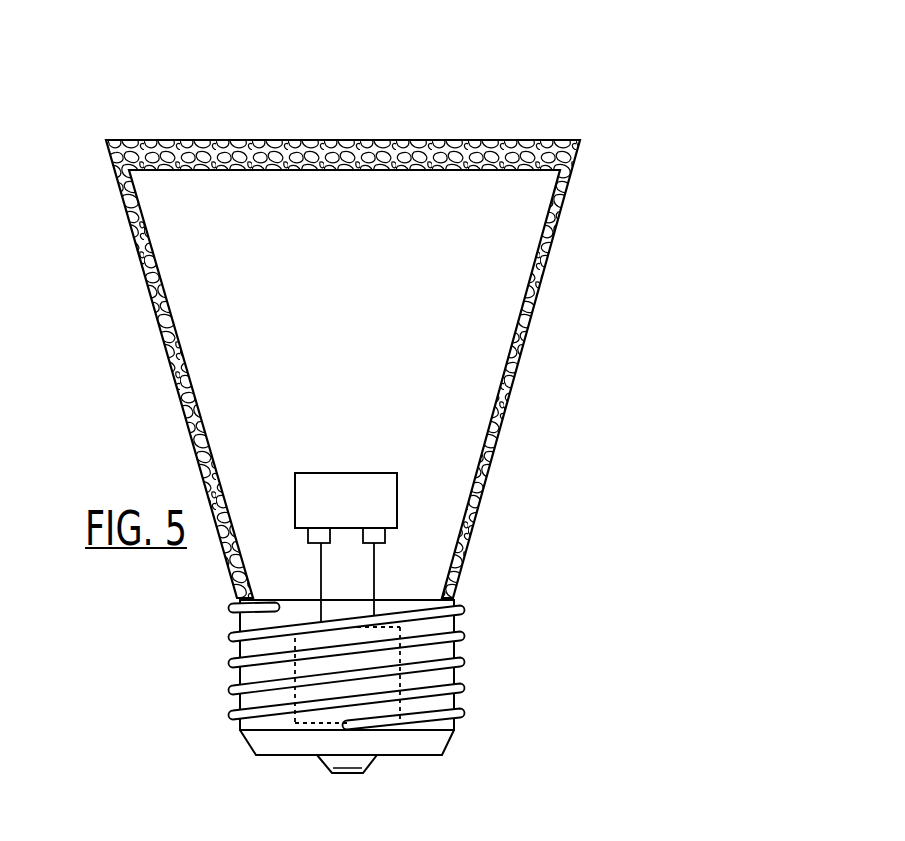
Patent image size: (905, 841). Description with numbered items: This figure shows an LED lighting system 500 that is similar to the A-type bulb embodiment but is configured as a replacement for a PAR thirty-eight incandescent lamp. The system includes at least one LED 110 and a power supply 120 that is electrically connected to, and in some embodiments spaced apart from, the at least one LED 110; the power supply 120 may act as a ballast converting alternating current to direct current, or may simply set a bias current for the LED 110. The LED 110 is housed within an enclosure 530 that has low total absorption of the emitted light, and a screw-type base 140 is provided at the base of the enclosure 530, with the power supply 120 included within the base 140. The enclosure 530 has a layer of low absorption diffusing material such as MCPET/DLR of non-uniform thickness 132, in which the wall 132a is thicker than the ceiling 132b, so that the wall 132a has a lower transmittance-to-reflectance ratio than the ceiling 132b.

The LED lighting system 500 is at (539, 118).
The enclosure 530 is at (317, 326).
The layer of low absorption diffusing material of non-uniform thickness 132 is at (343, 326).
The wall 132a is at (169, 352).
The ceiling 132b is at (263, 150).
The LED 110 is at (335, 473).
The power supply 120 is at (287, 658).
The screw-type base 140 is at (455, 676).